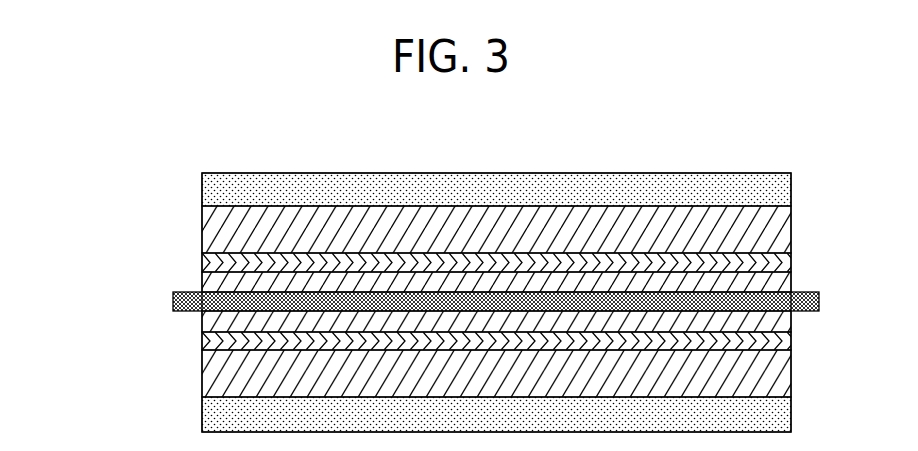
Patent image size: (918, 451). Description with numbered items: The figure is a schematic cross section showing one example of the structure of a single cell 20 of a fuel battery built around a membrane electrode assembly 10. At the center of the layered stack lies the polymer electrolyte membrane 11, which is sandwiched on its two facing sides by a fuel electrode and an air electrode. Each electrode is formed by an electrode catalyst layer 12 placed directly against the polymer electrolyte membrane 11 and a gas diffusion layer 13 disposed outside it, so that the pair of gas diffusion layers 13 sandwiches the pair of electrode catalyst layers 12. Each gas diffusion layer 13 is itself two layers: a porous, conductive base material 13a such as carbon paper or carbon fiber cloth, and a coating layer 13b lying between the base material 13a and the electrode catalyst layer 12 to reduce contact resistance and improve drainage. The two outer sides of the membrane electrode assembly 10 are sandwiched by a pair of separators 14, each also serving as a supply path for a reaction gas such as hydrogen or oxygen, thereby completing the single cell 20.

The single cell 20 is at (195, 135).
The membrane electrode assembly 10 is at (44, 195).
The polymer electrolyte membrane 11 is at (173, 309).
The electrode catalyst layer 12 is at (202, 285).
The gas diffusion layer 13 is at (94, 182).
The base material 13a is at (202, 232).
The coating layer 13b is at (202, 260).
The separator 14 is at (202, 184).